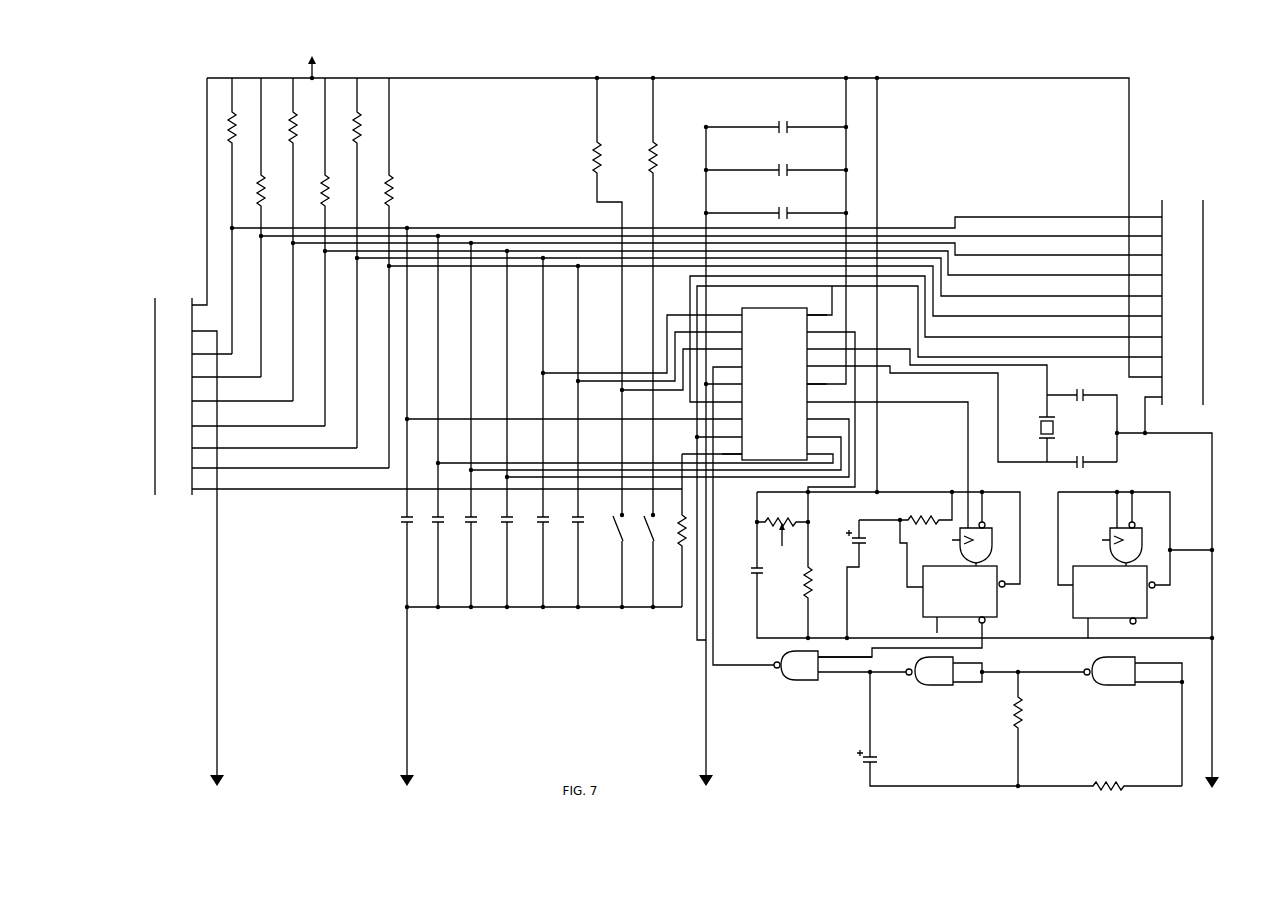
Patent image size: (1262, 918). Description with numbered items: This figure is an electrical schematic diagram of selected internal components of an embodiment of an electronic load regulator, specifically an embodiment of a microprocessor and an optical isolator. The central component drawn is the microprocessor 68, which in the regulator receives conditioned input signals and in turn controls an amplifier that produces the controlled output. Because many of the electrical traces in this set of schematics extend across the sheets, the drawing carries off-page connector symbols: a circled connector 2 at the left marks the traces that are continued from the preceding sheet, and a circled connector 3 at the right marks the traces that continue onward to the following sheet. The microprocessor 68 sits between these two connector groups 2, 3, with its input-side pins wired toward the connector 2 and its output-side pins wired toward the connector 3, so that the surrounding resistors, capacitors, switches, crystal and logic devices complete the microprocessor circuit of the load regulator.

The microprocessor 68 is at (1145, 94).
The off-page connector from FIG. 6 2 is at (172, 500).
The off-page connector to FIG. 8 3 is at (1178, 200).